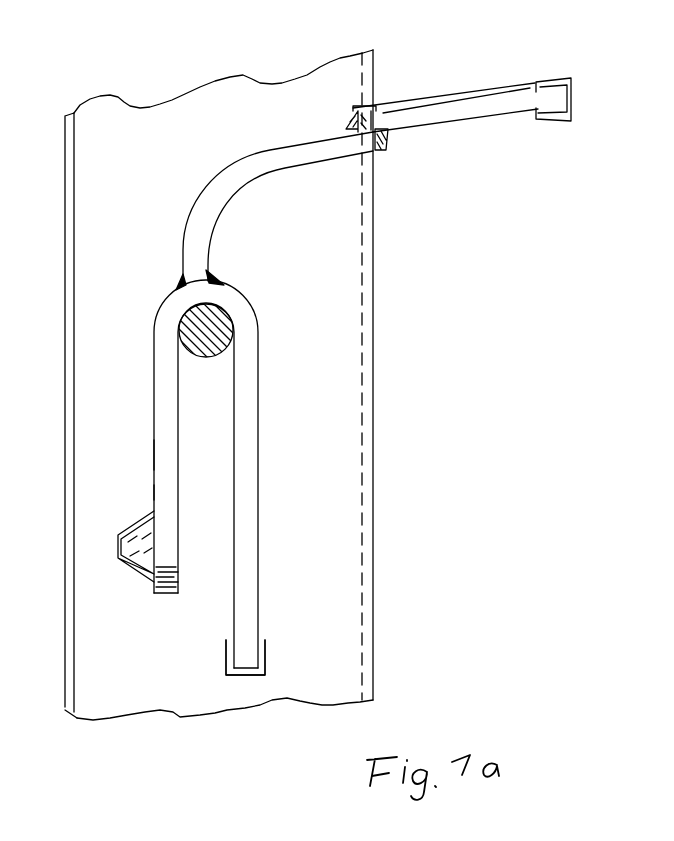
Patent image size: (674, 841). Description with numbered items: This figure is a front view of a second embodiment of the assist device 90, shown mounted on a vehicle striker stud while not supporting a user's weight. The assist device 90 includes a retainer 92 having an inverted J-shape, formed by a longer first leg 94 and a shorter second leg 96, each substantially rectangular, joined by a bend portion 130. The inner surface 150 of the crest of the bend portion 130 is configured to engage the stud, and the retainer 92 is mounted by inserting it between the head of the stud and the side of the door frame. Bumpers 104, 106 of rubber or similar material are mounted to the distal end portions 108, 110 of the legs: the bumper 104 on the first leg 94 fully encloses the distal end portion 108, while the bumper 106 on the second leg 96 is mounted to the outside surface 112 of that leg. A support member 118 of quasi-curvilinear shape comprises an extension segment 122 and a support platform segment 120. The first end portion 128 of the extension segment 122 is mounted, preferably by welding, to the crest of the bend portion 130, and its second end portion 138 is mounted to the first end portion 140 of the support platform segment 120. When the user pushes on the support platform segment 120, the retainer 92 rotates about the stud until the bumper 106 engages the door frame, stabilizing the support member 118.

The assist device 90 is at (143, 171).
The retainer 92 is at (301, 415).
The first leg 94 is at (259, 528).
The second leg 96 is at (162, 420).
The bumper 104 is at (571, 79).
The bumper 106 is at (153, 586).
The distal end portion 108 is at (255, 652).
The distal end portion 110 is at (182, 573).
The outside surface 112 is at (158, 490).
The support member 118 is at (306, 189).
The support platform segment 120 is at (460, 122).
The extension segment 122 is at (276, 154).
The first end portion 128 is at (184, 272).
The bend portion 130 is at (222, 290).
The second end portion 138 is at (375, 150).
The first end portion 140 is at (373, 112).
The inner surface 150 is at (236, 314).